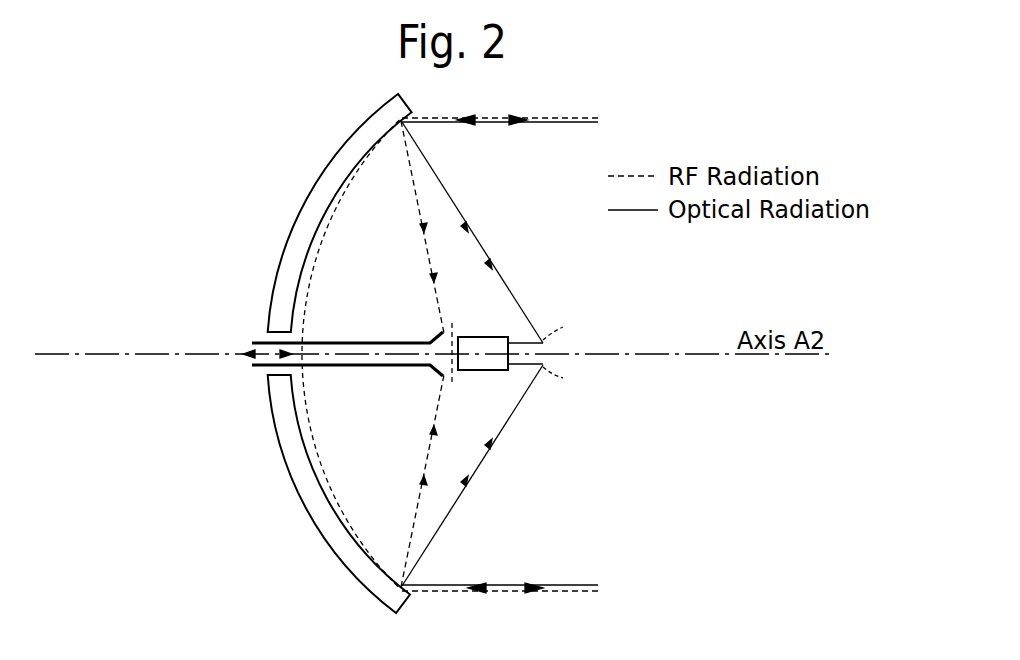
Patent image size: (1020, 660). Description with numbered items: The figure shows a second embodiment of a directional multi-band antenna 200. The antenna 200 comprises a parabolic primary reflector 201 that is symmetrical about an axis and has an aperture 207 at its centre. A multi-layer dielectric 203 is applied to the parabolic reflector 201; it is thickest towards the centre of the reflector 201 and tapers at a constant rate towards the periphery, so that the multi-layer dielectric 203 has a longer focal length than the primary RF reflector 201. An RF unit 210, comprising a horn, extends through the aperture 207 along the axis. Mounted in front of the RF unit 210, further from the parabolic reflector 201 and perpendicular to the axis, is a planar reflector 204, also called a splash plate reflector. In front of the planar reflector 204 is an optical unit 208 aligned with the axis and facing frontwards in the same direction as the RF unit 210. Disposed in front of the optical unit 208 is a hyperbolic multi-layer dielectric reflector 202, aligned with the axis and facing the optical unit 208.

The multi-band antenna 200 is at (662, 442).
The parabolic primary reflector 201 is at (308, 217).
The hyperbolic multi-layer dielectric reflector 202 is at (547, 341).
The multi-layer dielectric 203 is at (302, 413).
The planar reflector 204 is at (453, 377).
The aperture 207 is at (285, 373).
The optical unit 208 is at (497, 342).
The RF unit 210 is at (262, 340).